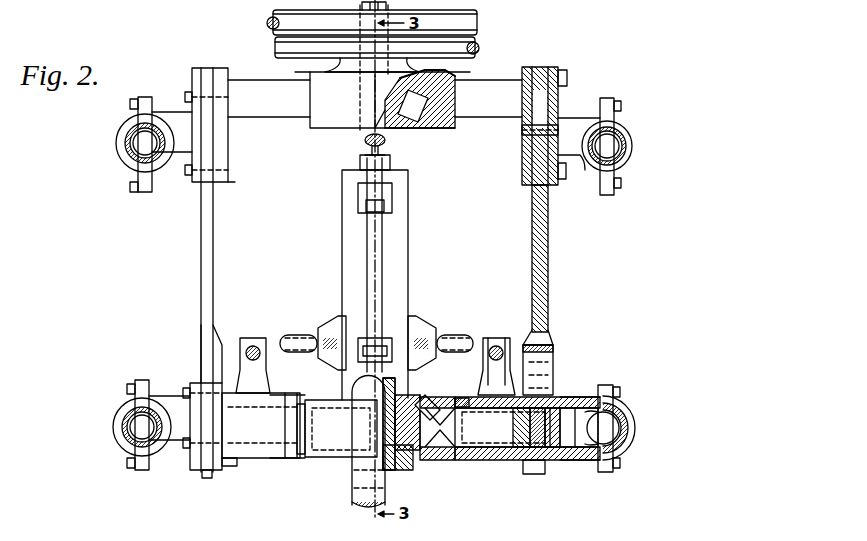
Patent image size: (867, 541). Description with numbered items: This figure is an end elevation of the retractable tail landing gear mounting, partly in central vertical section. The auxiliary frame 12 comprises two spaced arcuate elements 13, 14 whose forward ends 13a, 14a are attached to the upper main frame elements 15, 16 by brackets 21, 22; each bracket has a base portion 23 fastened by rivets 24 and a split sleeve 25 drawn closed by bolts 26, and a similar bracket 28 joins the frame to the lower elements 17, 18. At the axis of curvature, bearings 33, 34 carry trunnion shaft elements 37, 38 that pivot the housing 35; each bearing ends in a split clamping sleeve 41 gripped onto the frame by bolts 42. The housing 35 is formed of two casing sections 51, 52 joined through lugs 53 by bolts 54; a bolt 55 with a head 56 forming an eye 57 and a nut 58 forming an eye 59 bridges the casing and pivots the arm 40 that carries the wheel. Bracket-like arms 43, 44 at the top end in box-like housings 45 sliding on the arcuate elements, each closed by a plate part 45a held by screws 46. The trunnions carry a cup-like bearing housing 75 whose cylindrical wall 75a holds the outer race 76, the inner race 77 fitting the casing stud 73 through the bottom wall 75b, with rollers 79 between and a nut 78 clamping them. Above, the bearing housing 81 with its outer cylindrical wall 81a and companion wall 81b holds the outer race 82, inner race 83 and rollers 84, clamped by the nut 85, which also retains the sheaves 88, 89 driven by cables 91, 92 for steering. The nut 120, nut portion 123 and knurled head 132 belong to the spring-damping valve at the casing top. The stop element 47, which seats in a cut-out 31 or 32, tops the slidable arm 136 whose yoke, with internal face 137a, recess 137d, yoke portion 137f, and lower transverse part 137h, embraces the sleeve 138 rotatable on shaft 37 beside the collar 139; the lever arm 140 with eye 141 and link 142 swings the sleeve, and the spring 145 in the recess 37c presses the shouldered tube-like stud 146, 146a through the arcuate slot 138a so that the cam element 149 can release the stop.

The auxiliary frame 12 is at (195, 248).
The arcuate element 13 is at (560, 102).
The forward end of arcuate element 13a is at (542, 95).
The arcuate element 14 is at (215, 270).
The forward end of arcuate element 14a is at (212, 70).
The upper frame element 15 is at (623, 150).
The upper frame element 16 is at (128, 150).
The lower frame element 17 is at (622, 425).
The lower frame element 18 is at (128, 432).
The bracket 21 is at (580, 170).
The bracket 22 is at (178, 115).
The base portion 23 is at (196, 75).
The rivets 24 is at (192, 95).
The split sleeve 25 is at (115, 140).
The bolts 26 is at (130, 103).
The bracket 28 is at (112, 420).
The cut-out 31 is at (575, 132).
The cut-out 32 is at (200, 334).
The bearing 33 is at (570, 398).
The bearing 34 is at (168, 398).
The housing 35 is at (338, 241).
The trunnion shaft element 37 is at (568, 460).
The radial cylindrical recess 37c is at (605, 415).
The trunnion shaft element 38 is at (298, 458).
The arm 40 is at (356, 500).
The split clamping sleeve 41 is at (636, 435).
The bolts 42 is at (620, 390).
The bracket-like arm 43 is at (456, 125).
The bracket-like arm 44 is at (259, 108).
The box-like housing 45 is at (228, 182).
The plate part 45a is at (565, 72).
The screws 46 is at (192, 95).
The stop element 47 is at (553, 143).
The casing section 51 is at (408, 257).
The casing section 52 is at (342, 257).
The lugs 53 is at (364, 220).
The bolts 54 is at (357, 200).
The bolt 55 is at (356, 320).
The head 56 is at (430, 330).
The eye 57 is at (470, 320).
The nut 58 is at (322, 320).
The eye 59 is at (290, 355).
The casing stud 73 is at (377, 437).
The cup-like bearing housing 75 is at (305, 458).
The cylindrical wall 75a is at (443, 415).
The bottom wall 75b is at (440, 458).
The outer race 76 is at (432, 468).
The inner race 77 is at (385, 419).
The nut 78 is at (305, 455).
The rollers 79 is at (420, 395).
The bearing housing 81 is at (320, 120).
The outer cylindrical wall 81a is at (333, 122).
The companion wall 81b is at (295, 70).
The outer race 82 is at (455, 78).
The inner race 83 is at (412, 128).
The rollers 84 is at (455, 97).
The nut 85 is at (388, 8).
The sheave 88 is at (272, 14).
The sheave 89 is at (277, 42).
The flexible element 91 is at (252, 540).
The flexible element 92 is at (452, 60).
The nut 120 is at (358, 170).
The nut portion 123 is at (394, 165).
The head 132 is at (366, 143).
The slidable arm 136 is at (220, 335).
The internal face of yoke 137a is at (555, 475).
The recess 137d is at (555, 345).
The shoulder 137f is at (560, 352).
The lower transverse part of yoke 137h is at (200, 455).
The sleeve 138 is at (258, 458).
The arcuate slot 138a is at (548, 475).
The collar 139 is at (305, 404).
The lever arm 140 is at (252, 398).
The eye 141 is at (512, 355).
The link 142 is at (252, 345).
The spring 145 is at (470, 425).
The tube-like stud 146 is at (207, 478).
The shoulder 146a is at (565, 470).
The cam element 149 is at (548, 368).